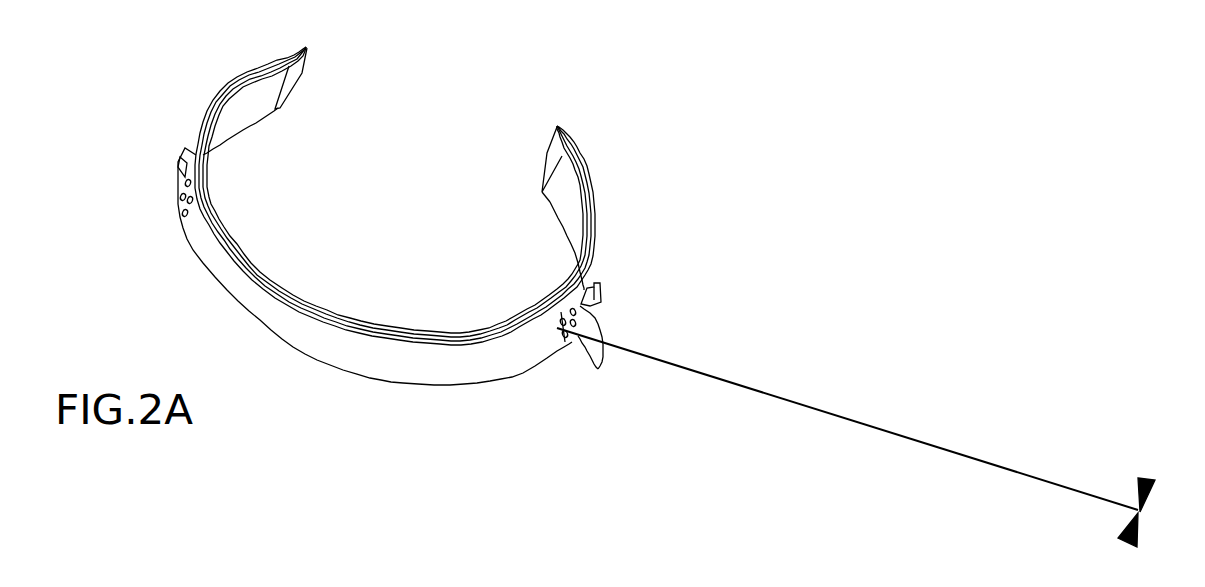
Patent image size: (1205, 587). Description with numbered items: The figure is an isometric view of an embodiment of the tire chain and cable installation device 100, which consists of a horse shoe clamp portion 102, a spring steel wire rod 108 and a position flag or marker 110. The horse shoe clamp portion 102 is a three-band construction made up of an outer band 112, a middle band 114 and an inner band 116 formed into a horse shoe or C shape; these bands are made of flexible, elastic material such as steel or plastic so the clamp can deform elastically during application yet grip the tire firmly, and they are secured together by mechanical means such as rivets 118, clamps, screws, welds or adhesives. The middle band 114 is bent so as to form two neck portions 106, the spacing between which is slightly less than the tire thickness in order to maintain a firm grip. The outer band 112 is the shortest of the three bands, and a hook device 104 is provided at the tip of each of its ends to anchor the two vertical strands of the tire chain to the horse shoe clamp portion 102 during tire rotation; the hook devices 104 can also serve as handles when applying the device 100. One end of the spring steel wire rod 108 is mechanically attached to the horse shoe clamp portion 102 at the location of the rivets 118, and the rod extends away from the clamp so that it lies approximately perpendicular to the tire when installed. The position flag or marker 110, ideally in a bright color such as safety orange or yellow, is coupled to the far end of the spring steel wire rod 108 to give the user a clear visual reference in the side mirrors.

The tire chain and cable installation device 100 is at (936, 337).
The horse shoe clamp portion 102 is at (320, 338).
The hook device 104 is at (603, 285).
The neck portion 106 is at (547, 153).
The spring steel wire rod 108 is at (1010, 470).
The position flag or marker 110 is at (1147, 478).
The outer band 112 is at (487, 332).
The middle band 114 is at (547, 310).
The inner band 116 is at (587, 225).
The rivets 118 is at (592, 362).